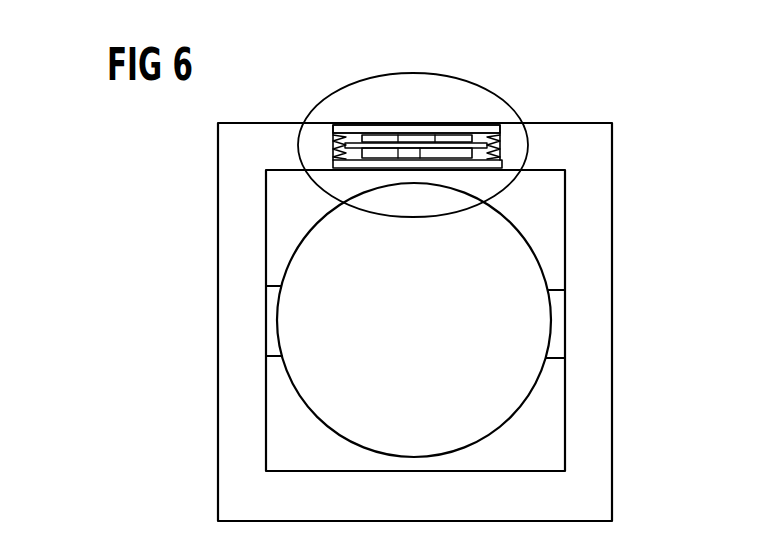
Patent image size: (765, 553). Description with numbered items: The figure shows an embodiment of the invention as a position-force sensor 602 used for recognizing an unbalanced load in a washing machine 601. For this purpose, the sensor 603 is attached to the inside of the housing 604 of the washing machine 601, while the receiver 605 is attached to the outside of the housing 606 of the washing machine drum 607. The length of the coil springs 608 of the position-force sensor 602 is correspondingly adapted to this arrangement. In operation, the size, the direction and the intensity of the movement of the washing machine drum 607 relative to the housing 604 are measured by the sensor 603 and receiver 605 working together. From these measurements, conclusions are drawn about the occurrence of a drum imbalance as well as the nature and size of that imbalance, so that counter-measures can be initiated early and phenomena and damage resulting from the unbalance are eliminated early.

The washing machine 601 is at (564, 170).
The position-force sensor 602 is at (342, 92).
The sensor 603 is at (375, 138).
The housing 604 is at (472, 127).
The receiver 605 is at (395, 152).
The housing 606 is at (477, 170).
The washing machine drum 607 is at (292, 326).
The coil springs 608 is at (489, 130).